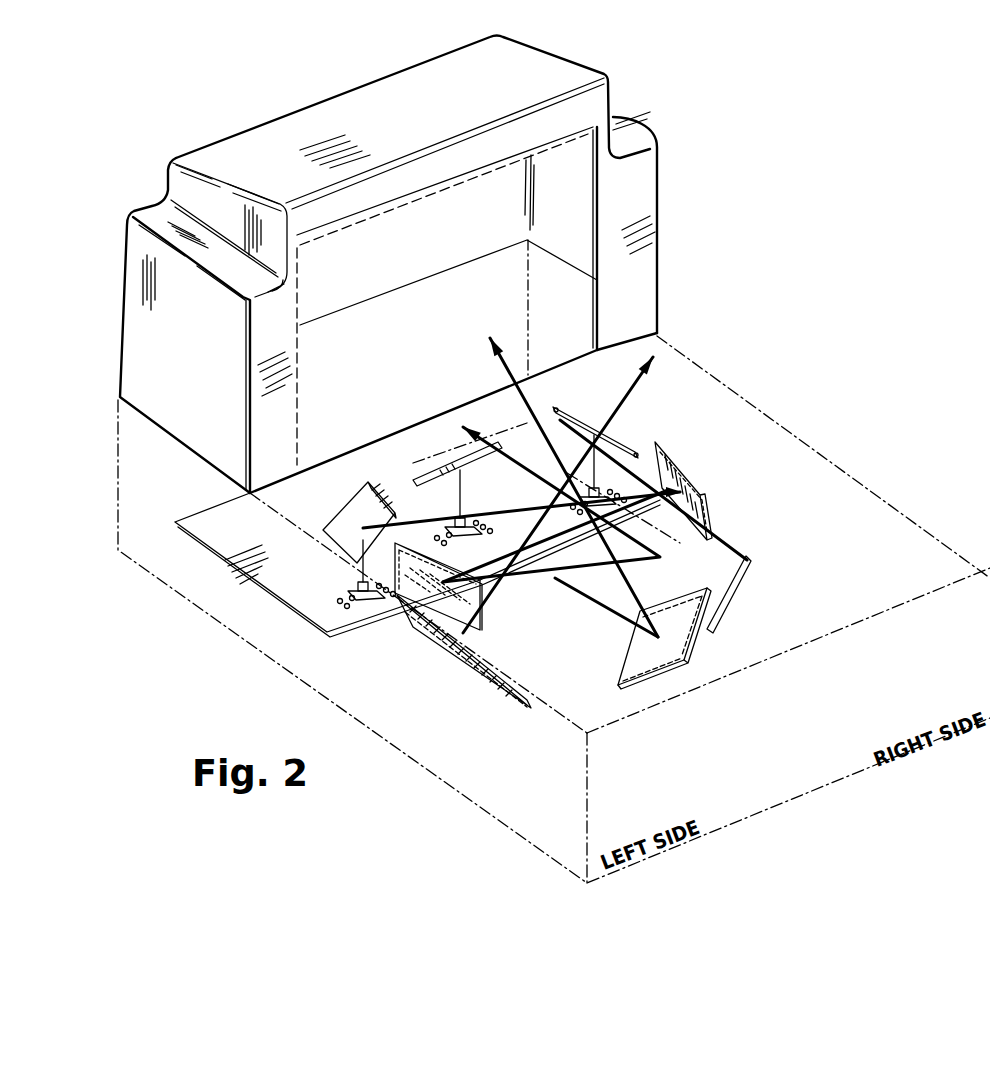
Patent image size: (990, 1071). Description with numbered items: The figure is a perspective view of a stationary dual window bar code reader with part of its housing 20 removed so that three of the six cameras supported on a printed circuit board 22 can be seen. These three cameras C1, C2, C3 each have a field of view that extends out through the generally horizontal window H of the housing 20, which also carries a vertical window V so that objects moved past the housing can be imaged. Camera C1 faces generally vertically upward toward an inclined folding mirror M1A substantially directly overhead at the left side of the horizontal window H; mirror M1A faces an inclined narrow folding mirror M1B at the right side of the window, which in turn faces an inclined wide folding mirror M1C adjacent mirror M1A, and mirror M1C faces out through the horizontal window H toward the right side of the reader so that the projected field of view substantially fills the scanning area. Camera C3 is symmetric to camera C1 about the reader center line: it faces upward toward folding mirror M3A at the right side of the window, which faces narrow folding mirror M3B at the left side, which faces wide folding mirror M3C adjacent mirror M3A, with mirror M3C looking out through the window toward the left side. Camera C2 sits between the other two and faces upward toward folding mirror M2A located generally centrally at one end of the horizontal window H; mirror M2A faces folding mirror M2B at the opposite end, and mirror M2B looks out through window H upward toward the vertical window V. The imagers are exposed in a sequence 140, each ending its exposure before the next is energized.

The housing 20 is at (622, 217).
The printed circuit board 22 is at (303, 583).
The sequence 140 is at (640, 455).
The vertical window V is at (563, 193).
The horizontal window H is at (705, 545).
The inclined folding mirror M1A is at (370, 512).
The inclined narrow folding mirror M1B is at (693, 481).
The inclined wide folding mirror M1C is at (478, 663).
The inclined folding mirror M2A is at (446, 472).
The inclined folding mirror M2B is at (655, 653).
The inclined folding mirror M3A is at (600, 438).
The inclined narrow folding mirror M3B is at (452, 598).
The inclined wide folding mirror M3C is at (728, 560).
The camera C1 is at (363, 600).
The camera C2 is at (452, 520).
The camera C3 is at (612, 485).